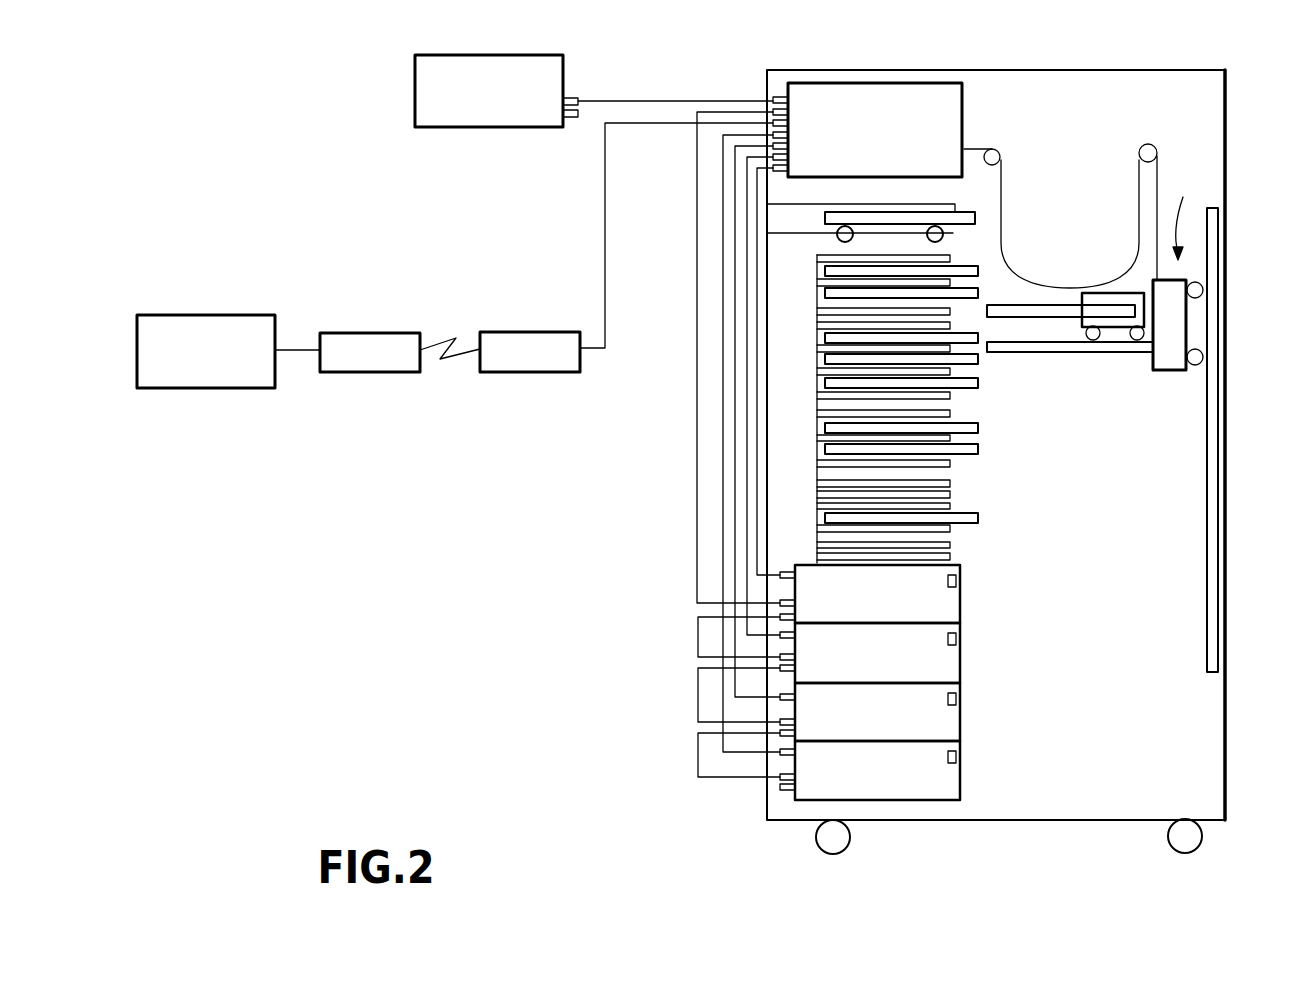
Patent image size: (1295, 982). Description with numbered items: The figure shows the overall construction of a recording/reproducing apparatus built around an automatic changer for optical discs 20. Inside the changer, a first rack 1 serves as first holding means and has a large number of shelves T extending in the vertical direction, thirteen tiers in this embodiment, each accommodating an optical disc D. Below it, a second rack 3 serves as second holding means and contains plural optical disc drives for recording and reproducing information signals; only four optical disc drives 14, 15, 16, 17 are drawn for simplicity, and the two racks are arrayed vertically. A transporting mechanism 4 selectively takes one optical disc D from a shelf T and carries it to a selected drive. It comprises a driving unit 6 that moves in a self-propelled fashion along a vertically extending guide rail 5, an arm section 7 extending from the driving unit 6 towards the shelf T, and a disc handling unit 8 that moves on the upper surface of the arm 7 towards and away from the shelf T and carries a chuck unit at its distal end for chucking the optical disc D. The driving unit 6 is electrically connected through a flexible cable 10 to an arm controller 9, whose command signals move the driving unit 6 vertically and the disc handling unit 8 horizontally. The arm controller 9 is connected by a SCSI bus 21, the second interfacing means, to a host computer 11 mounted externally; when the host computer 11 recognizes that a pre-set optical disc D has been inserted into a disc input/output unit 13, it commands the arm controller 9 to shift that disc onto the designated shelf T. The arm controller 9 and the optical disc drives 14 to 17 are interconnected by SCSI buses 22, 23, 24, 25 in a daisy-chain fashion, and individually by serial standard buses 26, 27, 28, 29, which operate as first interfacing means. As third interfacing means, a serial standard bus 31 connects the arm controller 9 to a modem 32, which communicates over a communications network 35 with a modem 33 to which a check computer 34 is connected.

The first rack 1 is at (1035, 530).
The second rack 3 is at (1033, 705).
The transporting mechanism 4 is at (1182, 214).
The guide rail 5 is at (1214, 440).
The driving unit 6 is at (1170, 370).
The arm section 7 is at (1105, 352).
The disc handling unit 8 is at (1133, 292).
The arm controller 9 is at (964, 122).
The flexible cable 10 is at (1003, 240).
The host computer 11 is at (415, 92).
The disc input/output unit 13 is at (935, 205).
The optical disc drive 14 is at (960, 601).
The optical disc drive 15 is at (960, 660).
The optical disc drive 16 is at (960, 718).
The optical disc drive 17 is at (960, 775).
The automatic changer for optical discs 20 is at (1224, 152).
The SCSI bus 21 is at (758, 100).
The SCSI bus 22 is at (697, 507).
The SCSI bus 23 is at (698, 622).
The SCSI bus 24 is at (698, 713).
The SCSI bus 25 is at (698, 765).
The RS-232C bus 26 is at (757, 568).
The RS-232C bus 27 is at (747, 570).
The RS-232C bus 28 is at (735, 545).
The RS-232C bus 29 is at (723, 530).
The RS-232C bus 31 is at (607, 336).
The modem 32 is at (530, 372).
The modem 33 is at (375, 372).
The check computer 34 is at (215, 388).
The communications network 35 is at (445, 337).
The shelf T is at (950, 413).
The optical disc D is at (966, 225).